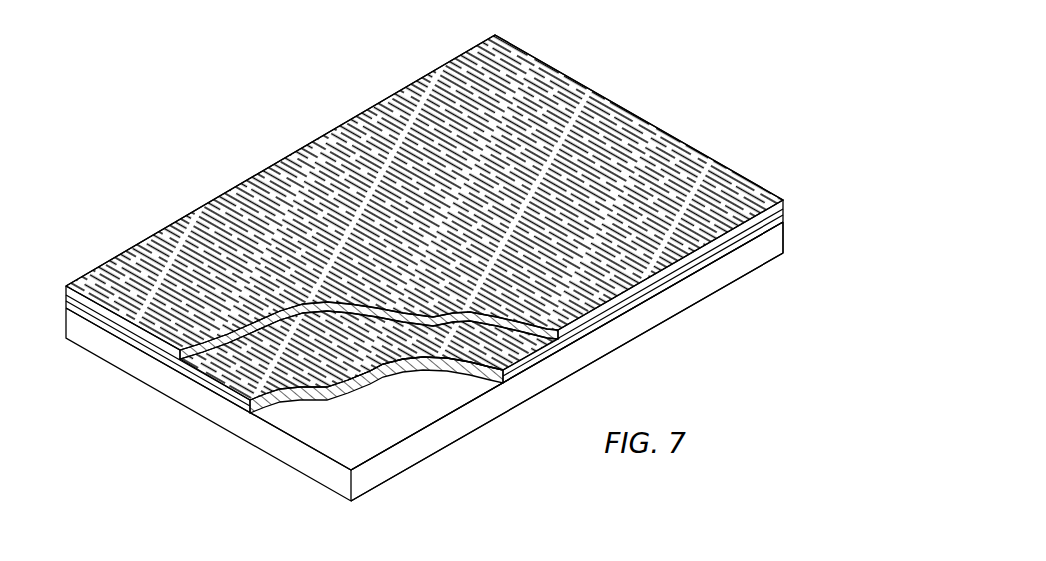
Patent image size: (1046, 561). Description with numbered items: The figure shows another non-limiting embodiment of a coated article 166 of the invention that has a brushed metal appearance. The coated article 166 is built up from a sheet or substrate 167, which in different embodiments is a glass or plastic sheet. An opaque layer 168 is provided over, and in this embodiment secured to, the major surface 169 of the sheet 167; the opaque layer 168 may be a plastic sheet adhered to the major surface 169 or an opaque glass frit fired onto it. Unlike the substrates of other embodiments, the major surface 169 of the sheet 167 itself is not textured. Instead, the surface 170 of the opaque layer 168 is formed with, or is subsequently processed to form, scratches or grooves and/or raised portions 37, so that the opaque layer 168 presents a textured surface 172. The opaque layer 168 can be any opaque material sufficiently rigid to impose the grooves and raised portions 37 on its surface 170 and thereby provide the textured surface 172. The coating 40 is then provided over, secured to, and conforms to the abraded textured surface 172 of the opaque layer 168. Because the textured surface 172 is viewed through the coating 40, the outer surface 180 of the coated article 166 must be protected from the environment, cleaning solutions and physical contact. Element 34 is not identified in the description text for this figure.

The substrate 34 is at (383, 483).
The scratches or grooves and/or raised portions 37 is at (352, 362).
The coating 40 is at (553, 69).
The coated article 166 is at (424, 272).
The sheet or substrate 167 is at (717, 280).
The opaque layer 168 is at (523, 362).
The major surface 169 is at (405, 421).
The surface of the opaque layer 170 is at (235, 375).
The textured surface 172 is at (547, 345).
The outer surface 180 is at (424, 216).